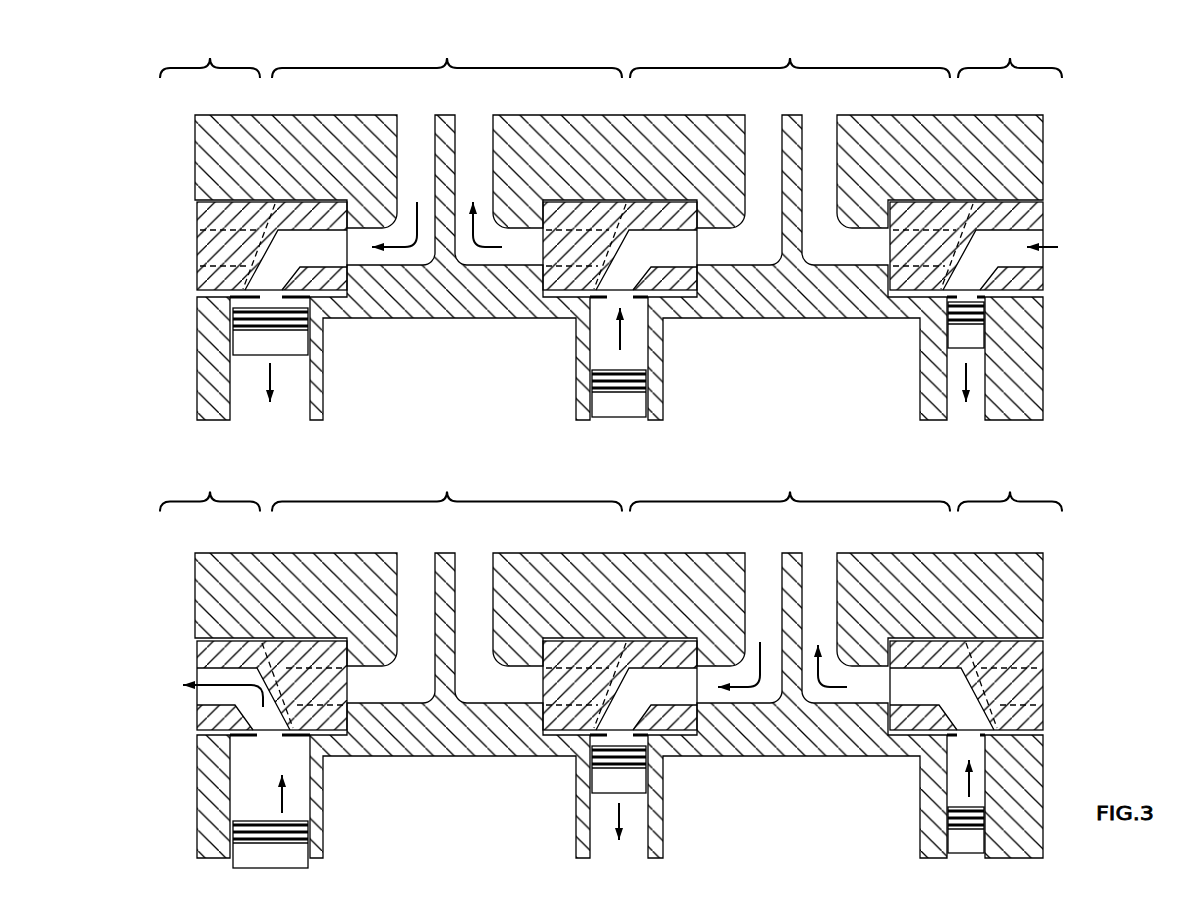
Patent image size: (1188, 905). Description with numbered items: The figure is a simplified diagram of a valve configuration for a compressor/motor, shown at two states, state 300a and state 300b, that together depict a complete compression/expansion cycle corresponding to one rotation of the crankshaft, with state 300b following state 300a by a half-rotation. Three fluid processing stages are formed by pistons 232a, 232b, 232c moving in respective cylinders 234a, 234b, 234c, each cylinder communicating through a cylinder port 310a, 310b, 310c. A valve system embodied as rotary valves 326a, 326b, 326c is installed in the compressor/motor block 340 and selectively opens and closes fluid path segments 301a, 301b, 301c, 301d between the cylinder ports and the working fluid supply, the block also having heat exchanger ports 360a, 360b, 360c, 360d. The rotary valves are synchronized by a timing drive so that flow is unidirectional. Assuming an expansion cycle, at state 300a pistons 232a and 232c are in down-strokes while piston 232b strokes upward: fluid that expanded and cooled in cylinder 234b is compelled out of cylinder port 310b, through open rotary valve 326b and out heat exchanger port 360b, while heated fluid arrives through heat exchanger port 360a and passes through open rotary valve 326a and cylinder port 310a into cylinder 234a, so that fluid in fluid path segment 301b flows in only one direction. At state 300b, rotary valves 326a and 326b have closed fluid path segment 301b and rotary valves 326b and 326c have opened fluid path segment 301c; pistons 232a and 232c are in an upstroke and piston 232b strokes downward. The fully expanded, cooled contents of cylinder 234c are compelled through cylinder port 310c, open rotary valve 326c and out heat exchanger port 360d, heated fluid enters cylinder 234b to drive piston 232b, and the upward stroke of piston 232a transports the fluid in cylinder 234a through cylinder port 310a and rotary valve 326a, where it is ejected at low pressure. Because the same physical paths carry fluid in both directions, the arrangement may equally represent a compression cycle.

The state 300a is at (150, 197).
The state 300b is at (150, 635).
The fluid path segment 301a is at (210, 271).
The fluid path segment 301b is at (447, 271).
The fluid path segment 301c is at (790, 271).
The fluid path segment 301d is at (1010, 271).
The compressor/motor block 340 is at (1045, 173).
The heat exchanger port 360a is at (398, 130).
The heat exchanger port 360b is at (456, 125).
The heat exchanger port 360c is at (746, 125).
The heat exchanger port 360d is at (838, 122).
The rotary valve 326a is at (197, 280).
The rotary valve 326b is at (673, 291).
The rotary valve 326c is at (1045, 217).
The cylinder port 310a is at (273, 280).
The cylinder port 310b is at (617, 282).
The cylinder port 310c is at (966, 288).
The piston 232a is at (245, 345).
The piston 232b is at (605, 402).
The piston 232c is at (955, 335).
The cylinder 234a is at (248, 393).
The cylinder 234b is at (605, 351).
The cylinder 234c is at (952, 395).